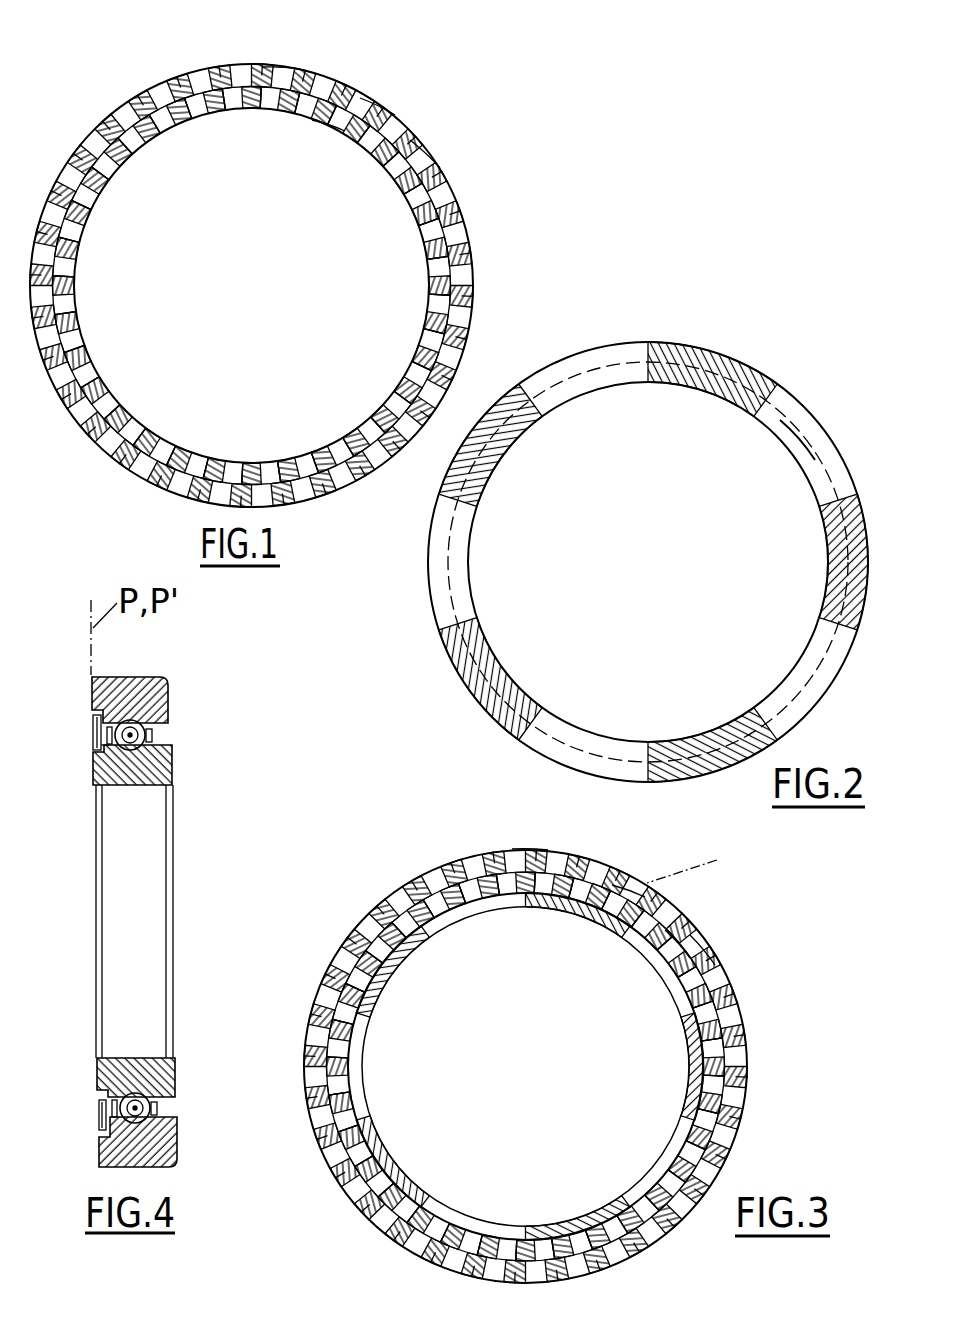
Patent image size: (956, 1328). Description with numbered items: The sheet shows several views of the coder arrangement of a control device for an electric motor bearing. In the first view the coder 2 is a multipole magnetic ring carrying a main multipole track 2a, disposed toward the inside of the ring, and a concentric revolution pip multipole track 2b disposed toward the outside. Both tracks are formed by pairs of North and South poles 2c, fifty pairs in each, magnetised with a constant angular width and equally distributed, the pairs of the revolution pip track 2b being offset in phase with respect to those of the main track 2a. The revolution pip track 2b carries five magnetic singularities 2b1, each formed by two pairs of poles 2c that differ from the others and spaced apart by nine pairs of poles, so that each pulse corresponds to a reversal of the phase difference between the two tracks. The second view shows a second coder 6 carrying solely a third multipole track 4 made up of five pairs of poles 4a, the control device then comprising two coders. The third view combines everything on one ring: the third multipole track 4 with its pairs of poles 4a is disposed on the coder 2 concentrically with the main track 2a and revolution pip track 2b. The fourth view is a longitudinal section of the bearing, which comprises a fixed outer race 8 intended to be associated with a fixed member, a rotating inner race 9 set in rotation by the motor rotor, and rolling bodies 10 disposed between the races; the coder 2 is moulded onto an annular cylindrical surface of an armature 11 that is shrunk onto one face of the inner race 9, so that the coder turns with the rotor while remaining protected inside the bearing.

In FIG. 1, the coder 2 is at (322, 68).
In FIG. 3, the coder 2 is at (543, 845).
In FIG. 4, the coder 2 is at (93, 728).
In FIG. 1, the main multipole track 2a is at (330, 122).
In FIG. 3, the main multipole track 2a is at (680, 943).
In FIG. 1, the revolution pip multipole track 2b is at (378, 103).
In FIG. 3, the revolution pip multipole track 2b is at (630, 883).
In FIG. 1, the magnetic singularity 2b1 is at (282, 65).
In FIG. 3, the magnetic singularity 2b1 is at (530, 849).
In FIG. 1, the pairs of North and South poles 2c is at (425, 153).
In FIG. 3, the pairs of North and South poles 2c is at (703, 948).
In FIG. 2, the third multipole track 4 is at (782, 432).
In FIG. 3, the third multipole track 4 is at (526, 1066).
In FIG. 2, the pairs of poles of the third track 4a is at (649, 553).
In FIG. 3, the pairs of poles of the third track 4a is at (526, 1066).
In FIG. 2, the second coder 6 is at (648, 513).
In FIG. 4, the fixed outer race 8 is at (160, 690).
In FIG. 4, the rotating inner race 9 is at (172, 765).
In FIG. 4, the rolling bodies 10 is at (152, 734).
In FIG. 4, the armature 11 is at (96, 760).